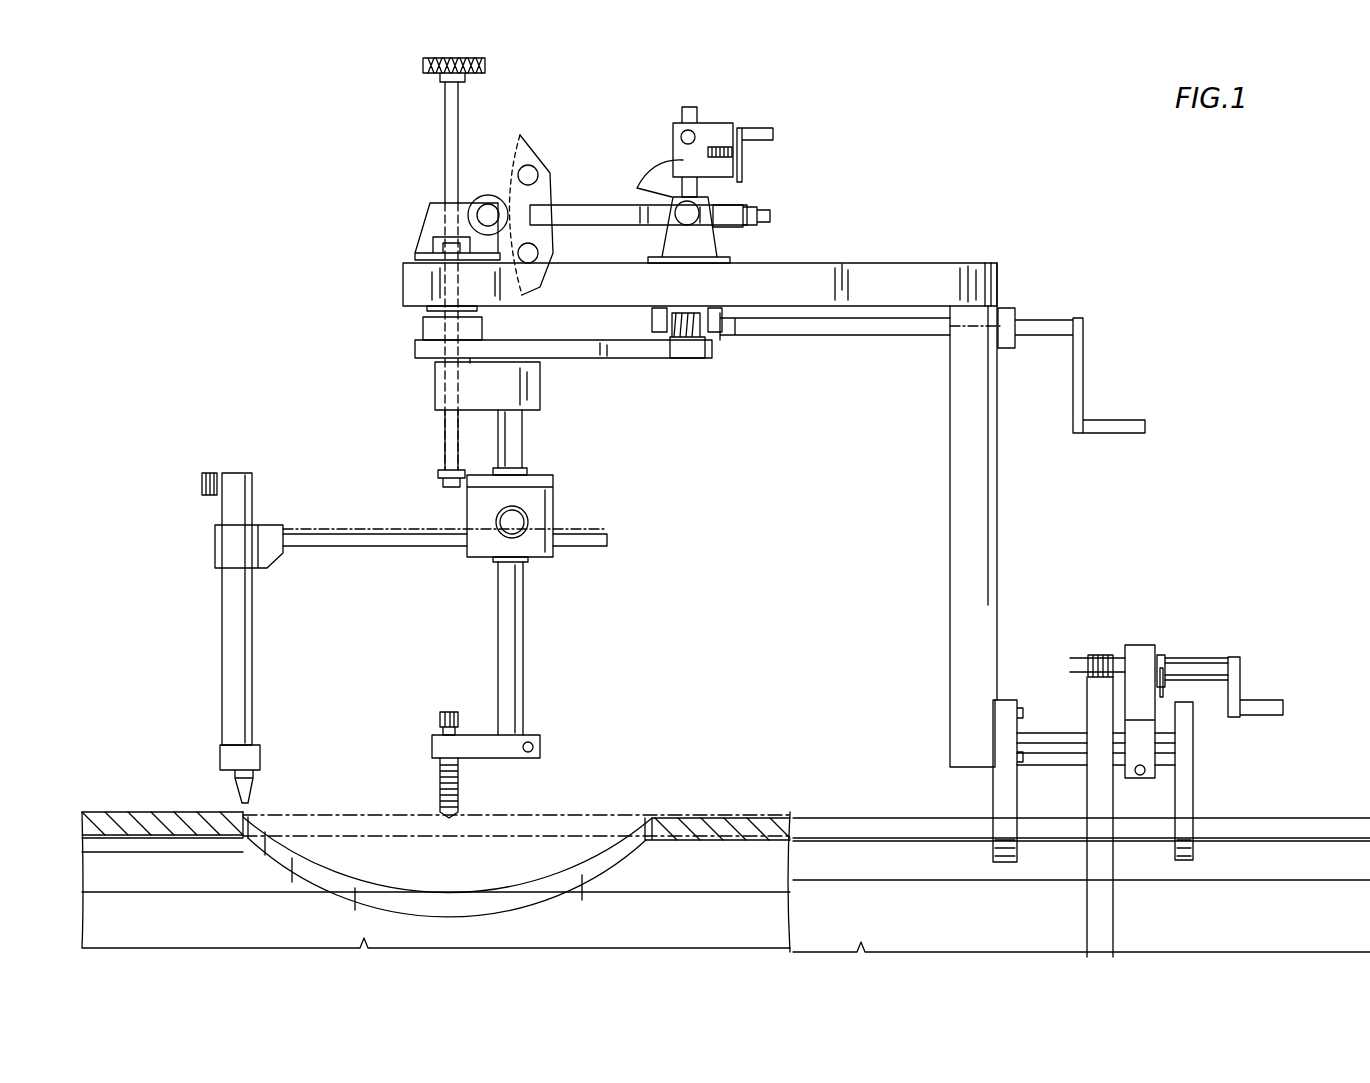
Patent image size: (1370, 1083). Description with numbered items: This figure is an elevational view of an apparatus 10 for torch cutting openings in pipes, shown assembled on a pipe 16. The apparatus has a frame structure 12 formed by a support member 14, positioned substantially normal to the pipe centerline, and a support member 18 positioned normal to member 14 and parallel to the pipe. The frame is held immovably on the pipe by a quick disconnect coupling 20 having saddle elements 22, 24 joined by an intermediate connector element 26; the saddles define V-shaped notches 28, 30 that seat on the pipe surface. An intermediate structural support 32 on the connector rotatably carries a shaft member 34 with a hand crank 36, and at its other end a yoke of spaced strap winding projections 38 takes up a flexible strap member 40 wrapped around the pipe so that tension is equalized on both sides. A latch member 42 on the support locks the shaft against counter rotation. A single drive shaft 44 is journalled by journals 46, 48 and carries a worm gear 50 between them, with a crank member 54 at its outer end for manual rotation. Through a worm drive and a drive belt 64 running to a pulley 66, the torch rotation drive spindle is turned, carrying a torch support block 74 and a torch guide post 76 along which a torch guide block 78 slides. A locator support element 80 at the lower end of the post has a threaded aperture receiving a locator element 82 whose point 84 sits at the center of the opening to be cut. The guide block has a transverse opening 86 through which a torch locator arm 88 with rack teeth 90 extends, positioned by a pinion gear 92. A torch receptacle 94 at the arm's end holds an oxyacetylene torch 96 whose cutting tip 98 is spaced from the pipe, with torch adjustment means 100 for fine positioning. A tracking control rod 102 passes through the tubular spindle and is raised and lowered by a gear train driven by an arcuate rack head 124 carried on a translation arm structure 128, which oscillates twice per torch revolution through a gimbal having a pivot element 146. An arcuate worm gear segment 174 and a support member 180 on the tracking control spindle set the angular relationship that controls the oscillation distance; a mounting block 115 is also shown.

The apparatus for cutting openings in pipes 10 is at (1097, 232).
The frame structure 12 is at (985, 263).
The support member 14 is at (987, 500).
The pipe 16 is at (705, 825).
The support member 18 is at (838, 280).
The quick disconnect type coupling 20 is at (1184, 621).
The saddle element 22 is at (992, 785).
The saddle element 24 is at (1185, 792).
The intermediate connector element 26 is at (1057, 740).
The V-shaped notch 28 is at (1000, 825).
The V-shaped notch 30 is at (1190, 830).
The intermediate structural support 32 is at (1142, 648).
The shaft member 34 is at (1215, 660).
The hand crank 36 is at (1233, 695).
The strap winding projections 38 is at (1085, 665).
The flexible strap member 40 is at (1098, 790).
The latch member 42 is at (1165, 670).
The drive shaft 44 is at (875, 322).
The journal 46 is at (715, 330).
The journal 48 is at (660, 335).
The worm gear 50 is at (688, 345).
The crank member 54 is at (1083, 382).
The drive belt 64 is at (575, 343).
The pulley 66 is at (420, 343).
The torch support block 74 is at (530, 390).
The torch guide post 76 is at (522, 446).
The torch guide block 78 is at (545, 508).
The locator support element 80 is at (520, 758).
The locator element 82 is at (440, 720).
The point 84 is at (451, 818).
The transverse opening 86 is at (495, 540).
The torch locator arm 88 is at (378, 540).
The rack teeth 90 is at (365, 530).
The pinion gear 92 is at (540, 550).
The torch receptacle 94 is at (225, 548).
The oxyacetylene torch 96 is at (225, 648).
The cutting tip 98 is at (240, 795).
The torch adjustment means 100 is at (200, 482).
The tracking control rod 102 is at (445, 105).
The mounting block 115 is at (430, 228).
The arcuate rack head 124 is at (533, 150).
The translation arm structure 128 is at (590, 215).
The pivot element 146 is at (760, 212).
The arcuate worm gear segment 174 is at (660, 185).
The support member 180 is at (722, 125).